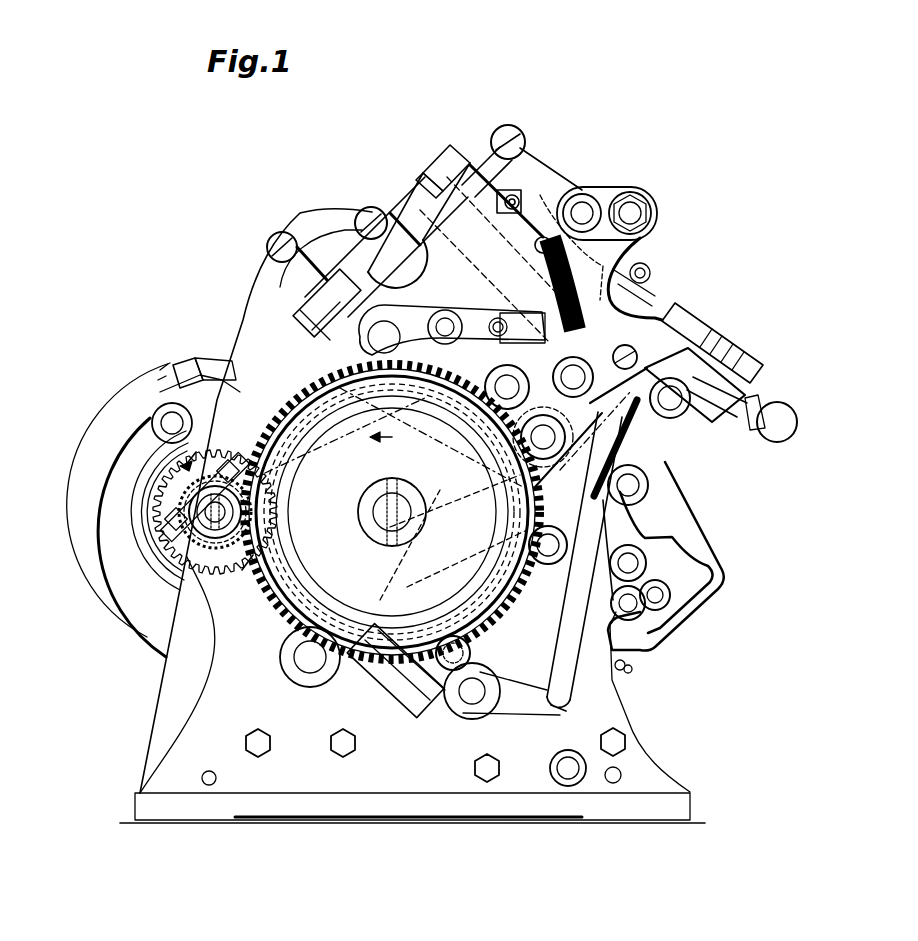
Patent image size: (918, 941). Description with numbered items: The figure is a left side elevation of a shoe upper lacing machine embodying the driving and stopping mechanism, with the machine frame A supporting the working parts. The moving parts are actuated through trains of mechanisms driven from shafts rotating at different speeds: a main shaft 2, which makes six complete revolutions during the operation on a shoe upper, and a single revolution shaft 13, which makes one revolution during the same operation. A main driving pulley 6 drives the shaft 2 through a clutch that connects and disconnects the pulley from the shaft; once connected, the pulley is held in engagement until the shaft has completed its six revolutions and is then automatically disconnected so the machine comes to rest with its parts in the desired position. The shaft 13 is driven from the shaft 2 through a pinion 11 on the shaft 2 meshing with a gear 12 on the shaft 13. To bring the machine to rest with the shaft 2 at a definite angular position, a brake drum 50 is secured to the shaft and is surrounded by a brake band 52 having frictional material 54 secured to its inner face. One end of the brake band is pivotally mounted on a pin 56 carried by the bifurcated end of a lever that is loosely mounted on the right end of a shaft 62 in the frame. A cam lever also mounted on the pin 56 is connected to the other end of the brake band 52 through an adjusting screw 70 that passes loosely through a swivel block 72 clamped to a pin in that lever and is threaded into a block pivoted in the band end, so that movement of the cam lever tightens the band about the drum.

The main shaft 2 is at (207, 517).
The main driving pulley 6 is at (98, 423).
The pinion 11 is at (230, 533).
The gear 12 is at (276, 609).
The single revolution shaft 13 is at (378, 517).
The brake drum 50 is at (150, 528).
The brake band 52 is at (143, 465).
The frictional material 54 is at (143, 502).
The pin 56 is at (168, 420).
The shaft 62 is at (452, 330).
The adjusting screw 70 is at (177, 367).
The swivel block 72 is at (212, 372).
The frame A is at (242, 724).